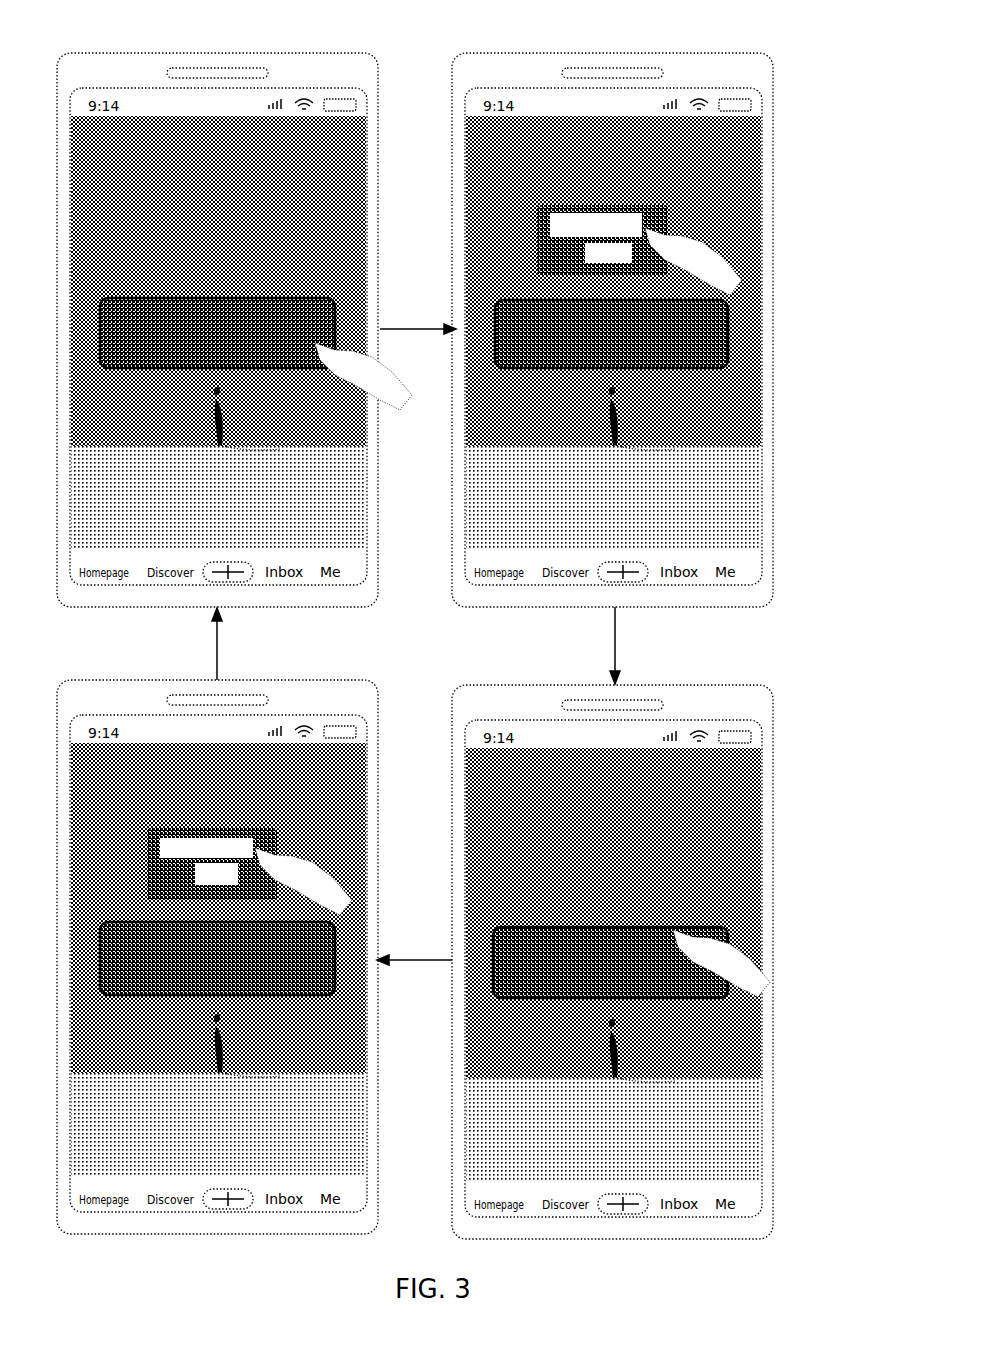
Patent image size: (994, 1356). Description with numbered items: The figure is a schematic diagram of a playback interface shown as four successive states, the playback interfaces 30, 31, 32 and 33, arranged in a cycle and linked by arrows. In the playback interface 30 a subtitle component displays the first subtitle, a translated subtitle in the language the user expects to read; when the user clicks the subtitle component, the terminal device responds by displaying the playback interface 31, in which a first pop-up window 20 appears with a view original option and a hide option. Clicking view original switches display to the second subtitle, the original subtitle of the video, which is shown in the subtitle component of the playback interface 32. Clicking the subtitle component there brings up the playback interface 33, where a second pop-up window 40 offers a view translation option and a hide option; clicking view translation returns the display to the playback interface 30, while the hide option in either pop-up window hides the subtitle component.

The first pop-up window 20 is at (670, 212).
The second pop-up window 40 is at (280, 832).
The playback interface 30 is at (237, 308).
The playback interface 31 is at (632, 308).
The playback interface 32 is at (632, 940).
The playback interface 33 is at (240, 937).